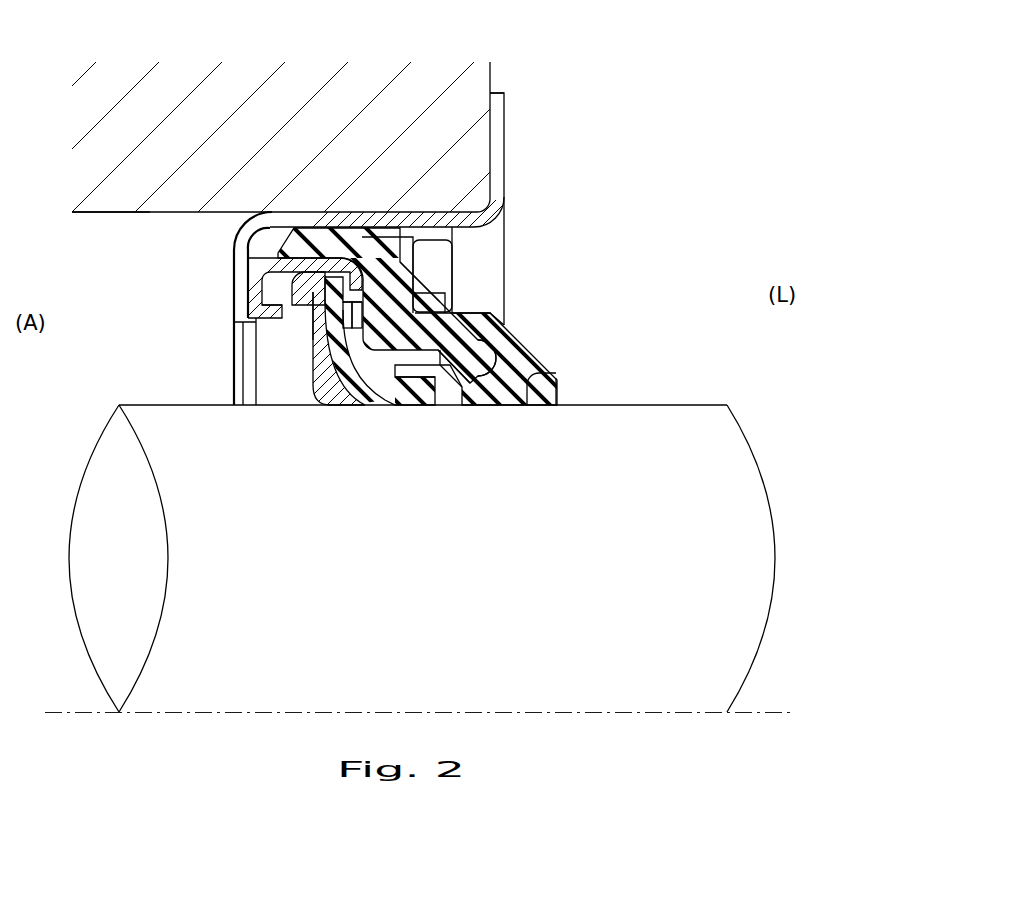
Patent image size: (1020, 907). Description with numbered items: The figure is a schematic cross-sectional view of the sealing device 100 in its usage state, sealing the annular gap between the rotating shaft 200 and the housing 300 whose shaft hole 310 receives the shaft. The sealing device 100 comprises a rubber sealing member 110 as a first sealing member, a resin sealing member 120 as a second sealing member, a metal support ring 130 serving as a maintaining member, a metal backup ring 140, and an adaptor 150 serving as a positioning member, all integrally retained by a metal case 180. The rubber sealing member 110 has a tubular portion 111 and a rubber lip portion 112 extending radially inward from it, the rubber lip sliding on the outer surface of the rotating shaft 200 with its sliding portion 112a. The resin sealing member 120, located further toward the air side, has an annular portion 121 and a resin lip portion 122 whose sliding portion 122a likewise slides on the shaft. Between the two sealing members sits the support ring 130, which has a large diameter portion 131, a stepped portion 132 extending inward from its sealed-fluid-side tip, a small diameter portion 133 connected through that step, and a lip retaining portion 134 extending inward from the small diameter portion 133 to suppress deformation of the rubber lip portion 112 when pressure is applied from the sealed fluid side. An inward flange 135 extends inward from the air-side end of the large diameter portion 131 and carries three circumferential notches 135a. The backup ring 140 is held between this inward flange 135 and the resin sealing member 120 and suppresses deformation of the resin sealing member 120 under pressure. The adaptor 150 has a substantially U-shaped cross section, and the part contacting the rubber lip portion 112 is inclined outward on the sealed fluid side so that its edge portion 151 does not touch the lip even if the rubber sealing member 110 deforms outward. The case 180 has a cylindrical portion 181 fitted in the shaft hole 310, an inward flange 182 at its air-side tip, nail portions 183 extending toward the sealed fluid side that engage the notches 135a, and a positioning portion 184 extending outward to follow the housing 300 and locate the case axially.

The sealing device 100 is at (633, 174).
The rubber sealing member 110 is at (522, 332).
The tubular portion 111 is at (385, 245).
The rubber lip portion 112 is at (514, 395).
The sliding portion 112a is at (557, 380).
The resin sealing member 120 is at (382, 405).
The annular portion 121 is at (308, 330).
The resin lip portion 122 is at (342, 402).
The sliding portion 122a is at (412, 405).
The support ring 130 is at (520, 332).
The large diameter portion 131 is at (308, 265).
The stepped portion 132 is at (352, 390).
The small diameter portion 133 is at (446, 368).
The lip retaining portion 134 is at (460, 372).
The inward flange 135 is at (247, 292).
The notch 135a is at (262, 320).
The backup ring 140 is at (292, 306).
The adaptor 150 is at (423, 276).
The edge portion 151 is at (452, 305).
The case 180 is at (507, 166).
The cylindrical portion 181 is at (355, 212).
The inward flange 182 is at (238, 256).
The nail portion 183 is at (244, 320).
The positioning portion 184 is at (497, 132).
The rotating shaft 200 is at (693, 427).
The housing 300 is at (483, 84).
The shaft hole 310 is at (95, 215).